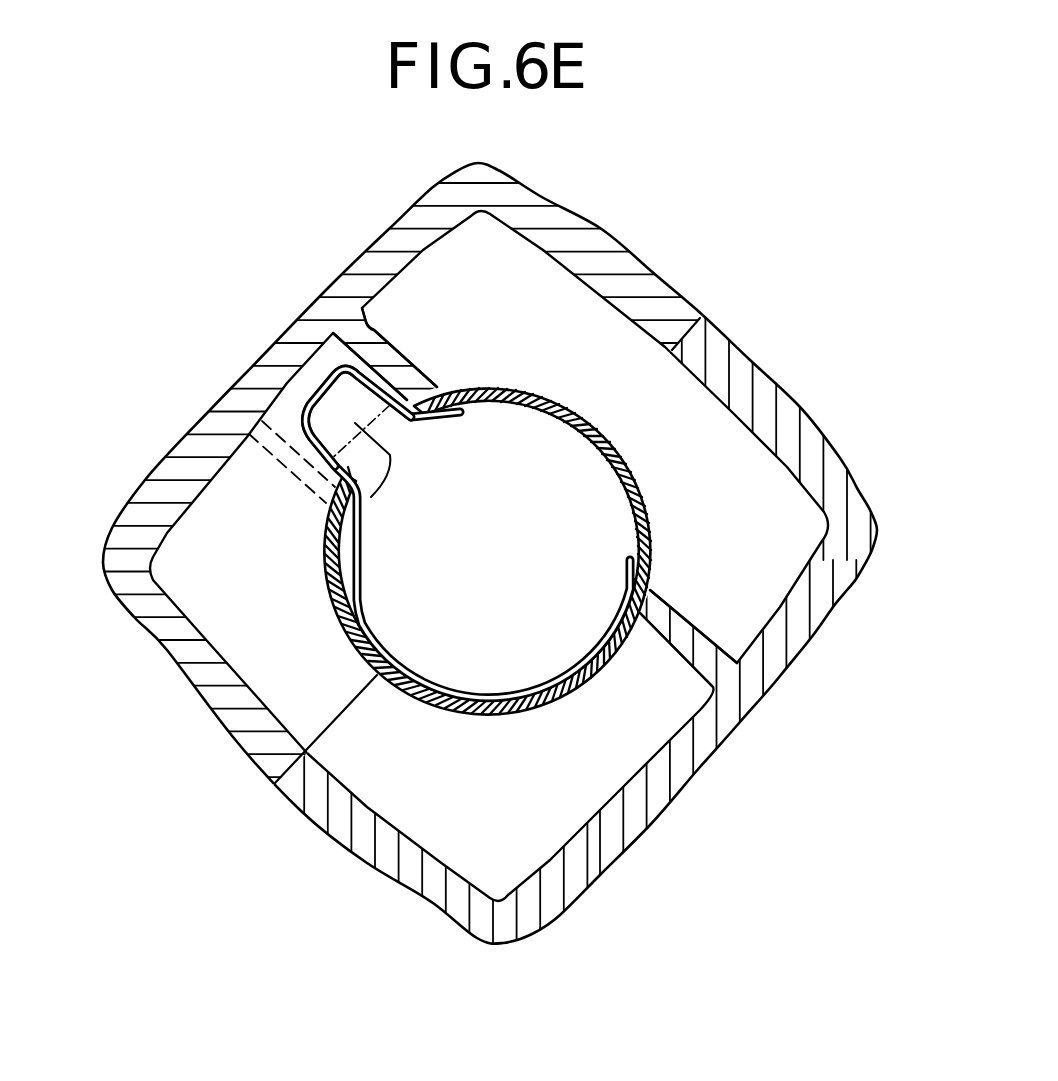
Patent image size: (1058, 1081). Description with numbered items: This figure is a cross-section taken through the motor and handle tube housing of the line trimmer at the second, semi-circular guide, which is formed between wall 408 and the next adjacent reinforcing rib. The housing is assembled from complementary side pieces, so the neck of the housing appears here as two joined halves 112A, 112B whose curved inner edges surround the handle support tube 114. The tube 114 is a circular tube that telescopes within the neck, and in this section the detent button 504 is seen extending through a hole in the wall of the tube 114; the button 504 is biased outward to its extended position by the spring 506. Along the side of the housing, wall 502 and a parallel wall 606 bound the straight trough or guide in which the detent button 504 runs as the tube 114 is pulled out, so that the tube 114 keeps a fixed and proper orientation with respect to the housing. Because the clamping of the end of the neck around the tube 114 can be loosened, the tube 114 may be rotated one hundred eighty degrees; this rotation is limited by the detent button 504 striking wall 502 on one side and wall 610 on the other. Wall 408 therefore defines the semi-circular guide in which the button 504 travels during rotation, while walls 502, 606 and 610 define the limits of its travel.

The first housing half 112A is at (172, 472).
The second housing half 112B is at (632, 829).
The handle support tube 114 is at (648, 488).
The wall 408 is at (392, 428).
The wall 502 is at (376, 330).
The detent button 504 is at (300, 398).
The spring 506 is at (362, 580).
The wall 606 is at (267, 460).
The wall 610 is at (681, 637).